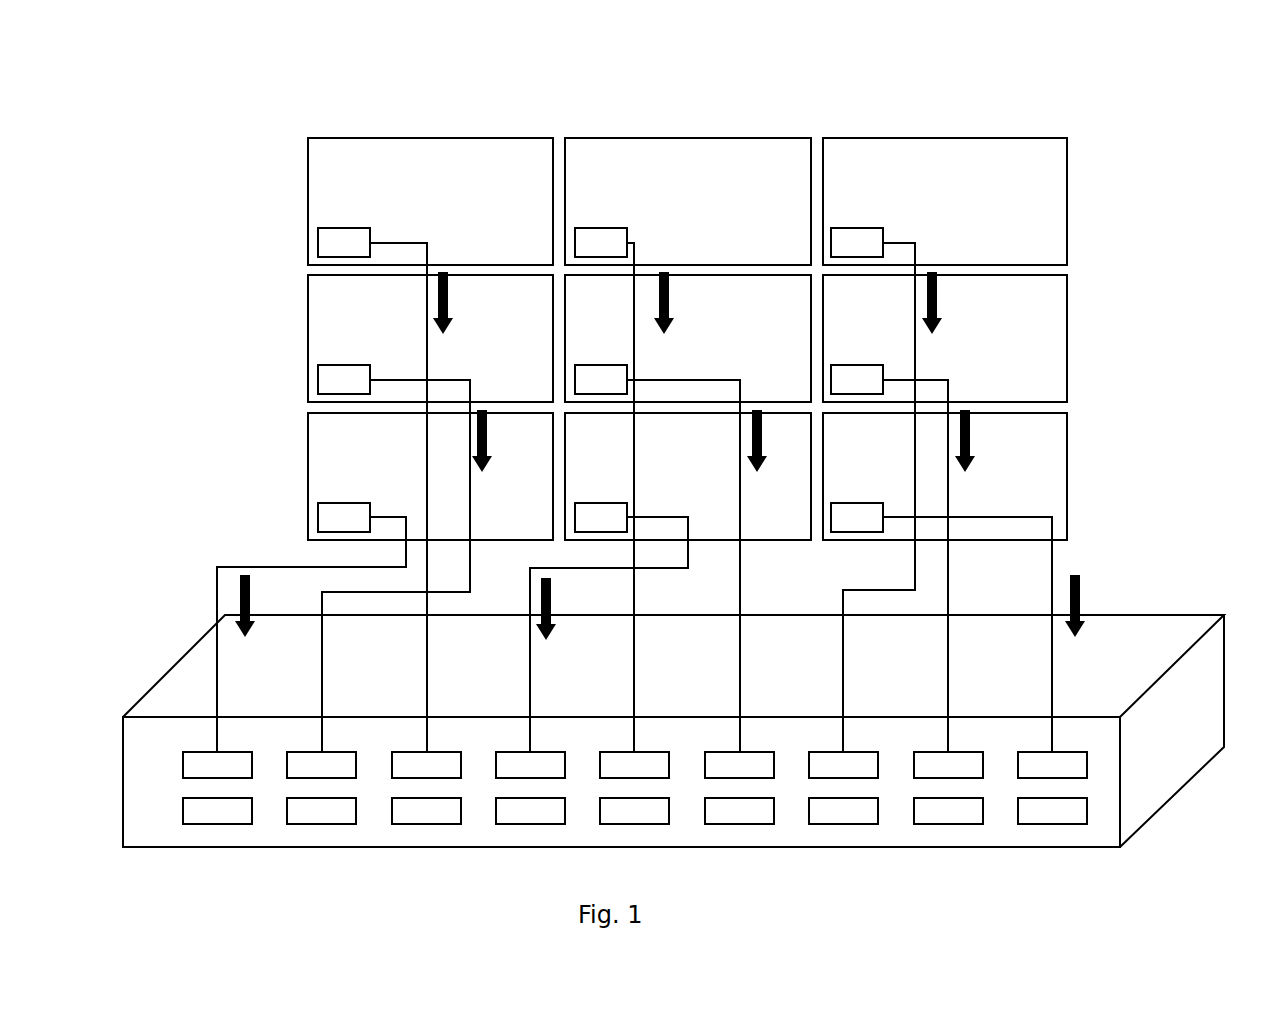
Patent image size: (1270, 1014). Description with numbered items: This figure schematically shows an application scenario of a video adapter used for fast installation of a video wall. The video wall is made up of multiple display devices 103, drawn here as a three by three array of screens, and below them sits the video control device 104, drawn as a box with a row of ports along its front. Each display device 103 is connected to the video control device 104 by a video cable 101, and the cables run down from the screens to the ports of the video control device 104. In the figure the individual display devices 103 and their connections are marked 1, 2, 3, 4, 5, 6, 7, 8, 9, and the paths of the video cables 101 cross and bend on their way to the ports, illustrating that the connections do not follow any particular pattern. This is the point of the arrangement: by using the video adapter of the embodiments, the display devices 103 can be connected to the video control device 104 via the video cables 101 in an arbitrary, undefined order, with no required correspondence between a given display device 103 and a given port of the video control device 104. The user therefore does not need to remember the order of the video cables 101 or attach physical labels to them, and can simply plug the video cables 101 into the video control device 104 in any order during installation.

The first display screen port and signal path 1 is at (395, 503).
The second display screen port and signal path 2 is at (634, 503).
The third display screen port and signal path 3 is at (885, 503).
The fourth display screen port and signal path 4 is at (399, 571).
The fifth display screen port and signal path 5 is at (681, 571).
The sixth display screen port and signal path 6 is at (913, 571).
The seventh display screen port and signal path 7 is at (294, 640).
The eighth display screen port and signal path 8 is at (592, 640).
The ninth display screen port and signal path 9 is at (968, 640).
The video cable 101 is at (226, 567).
The display device 103 is at (443, 220).
The video control device 104 is at (1135, 615).